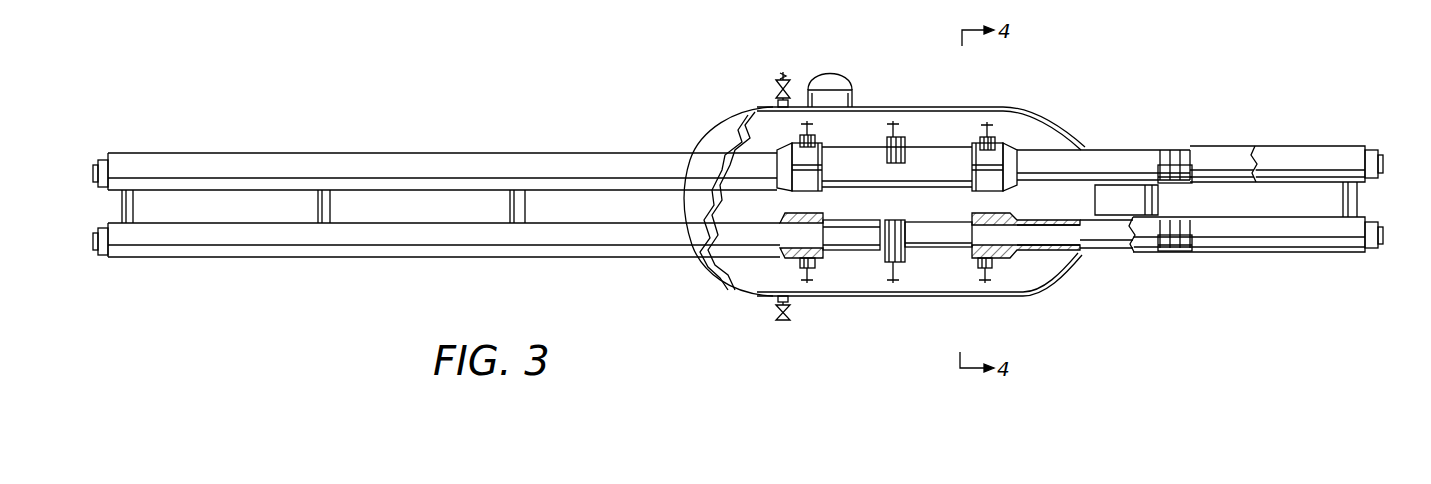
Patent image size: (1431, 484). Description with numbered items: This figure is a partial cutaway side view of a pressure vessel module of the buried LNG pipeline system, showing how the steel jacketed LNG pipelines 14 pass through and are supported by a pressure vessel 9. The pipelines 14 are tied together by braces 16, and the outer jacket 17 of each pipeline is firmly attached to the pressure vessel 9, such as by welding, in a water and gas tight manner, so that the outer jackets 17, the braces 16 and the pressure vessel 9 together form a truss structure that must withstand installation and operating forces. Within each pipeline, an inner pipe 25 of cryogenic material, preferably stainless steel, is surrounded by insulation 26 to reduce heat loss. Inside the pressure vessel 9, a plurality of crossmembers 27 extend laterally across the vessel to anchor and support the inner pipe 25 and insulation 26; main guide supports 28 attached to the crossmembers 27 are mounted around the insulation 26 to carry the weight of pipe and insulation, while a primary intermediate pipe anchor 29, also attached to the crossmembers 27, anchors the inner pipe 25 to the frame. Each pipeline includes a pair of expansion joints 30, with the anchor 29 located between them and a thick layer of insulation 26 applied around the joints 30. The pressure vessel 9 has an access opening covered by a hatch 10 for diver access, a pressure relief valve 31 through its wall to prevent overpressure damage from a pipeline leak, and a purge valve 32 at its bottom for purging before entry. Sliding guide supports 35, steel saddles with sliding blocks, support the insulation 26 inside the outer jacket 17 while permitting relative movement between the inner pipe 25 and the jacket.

The pressure vessel 9 is at (1038, 110).
The hatch 10 is at (843, 75).
The steel jacketed LNG pipeline 14 is at (480, 157).
The brace 16 is at (133, 203).
The outer jacket 17 is at (373, 152).
The inner pipe 25 is at (1036, 236).
The insulation 26 is at (1112, 150).
The crossmember 27 is at (893, 130).
The main guide support 28 is at (797, 217).
The primary intermediate pipe anchor 29 is at (912, 137).
The expansion joint 30 is at (920, 228).
The pressure relief valve 31 is at (777, 95).
The purge valve 32 is at (777, 311).
The sliding guide support 35 is at (1190, 220).